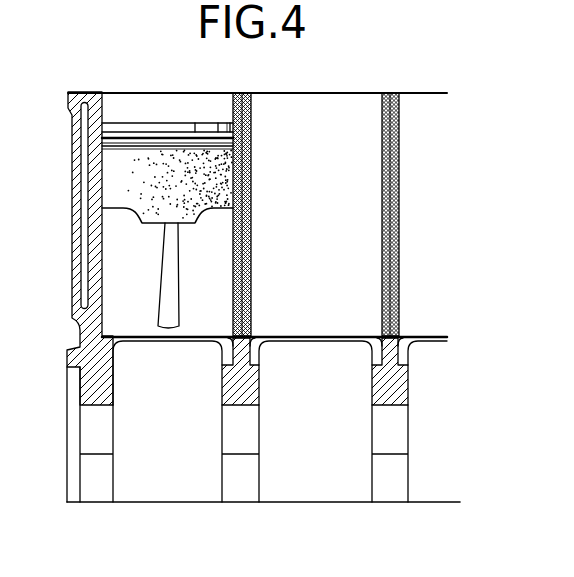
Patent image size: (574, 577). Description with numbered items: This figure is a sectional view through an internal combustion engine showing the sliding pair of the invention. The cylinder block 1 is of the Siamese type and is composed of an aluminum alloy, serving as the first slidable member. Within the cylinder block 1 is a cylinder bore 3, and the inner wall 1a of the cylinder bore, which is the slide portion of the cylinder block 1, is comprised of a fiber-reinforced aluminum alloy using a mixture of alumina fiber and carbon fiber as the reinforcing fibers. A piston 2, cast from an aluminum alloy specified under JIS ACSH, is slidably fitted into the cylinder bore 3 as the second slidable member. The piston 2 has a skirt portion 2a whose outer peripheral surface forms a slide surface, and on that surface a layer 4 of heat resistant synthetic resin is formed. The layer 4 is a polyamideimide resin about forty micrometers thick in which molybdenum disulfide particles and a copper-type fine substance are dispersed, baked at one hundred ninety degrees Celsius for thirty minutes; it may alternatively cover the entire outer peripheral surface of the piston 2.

The cylinder block 1 is at (358, 89).
The inner wall of the cylinder bore 1a is at (235, 92).
The piston 2 is at (135, 115).
The skirt portion 2a is at (251, 152).
The cylinder bore 3 is at (174, 110).
The layer of heat resistant synthetic resin 4 is at (123, 195).